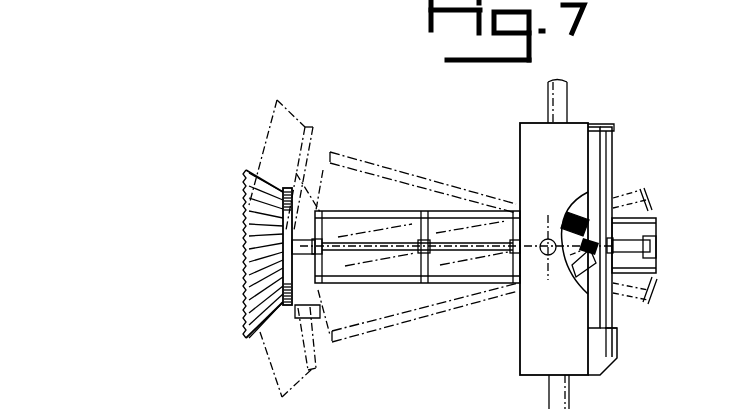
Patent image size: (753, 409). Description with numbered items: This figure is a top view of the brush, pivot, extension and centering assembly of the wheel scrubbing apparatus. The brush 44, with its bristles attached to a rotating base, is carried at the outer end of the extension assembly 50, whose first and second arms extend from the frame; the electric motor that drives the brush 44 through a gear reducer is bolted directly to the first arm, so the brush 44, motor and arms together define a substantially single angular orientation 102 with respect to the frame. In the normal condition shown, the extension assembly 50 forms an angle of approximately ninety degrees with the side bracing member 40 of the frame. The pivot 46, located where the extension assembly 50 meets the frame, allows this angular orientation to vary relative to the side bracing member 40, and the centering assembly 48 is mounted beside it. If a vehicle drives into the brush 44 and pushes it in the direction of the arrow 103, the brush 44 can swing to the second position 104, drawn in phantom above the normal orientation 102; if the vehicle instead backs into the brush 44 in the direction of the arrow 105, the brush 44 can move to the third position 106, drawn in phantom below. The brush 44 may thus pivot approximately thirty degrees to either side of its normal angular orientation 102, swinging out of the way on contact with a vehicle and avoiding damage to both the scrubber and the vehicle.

The side bracing member 40 is at (558, 108).
The brush 44 is at (294, 110).
The pivot 46 is at (551, 208).
The centering assembly 48 is at (621, 181).
The extension assembly 50 is at (428, 160).
The angular orientation 102 is at (232, 255).
The arrow 103 is at (96, 152).
The second position 104 is at (254, 144).
The arrow 105 is at (95, 325).
The third position 106 is at (266, 368).